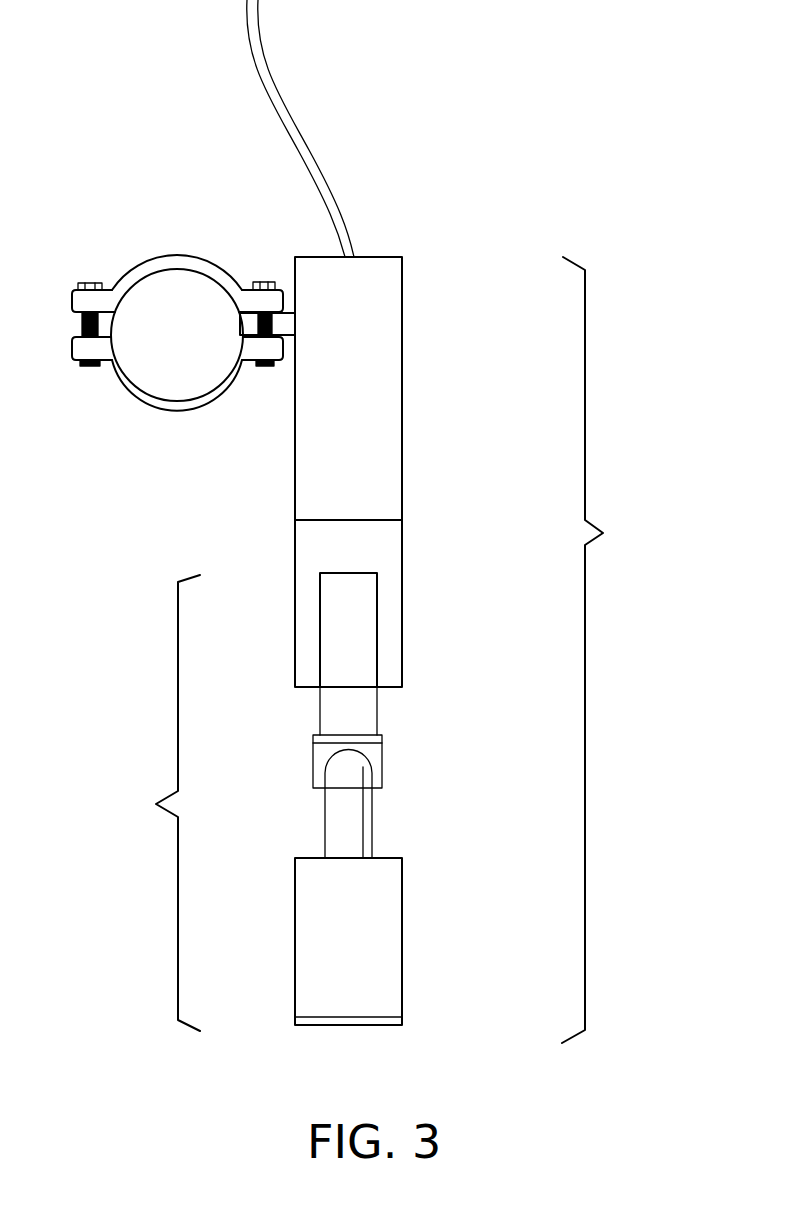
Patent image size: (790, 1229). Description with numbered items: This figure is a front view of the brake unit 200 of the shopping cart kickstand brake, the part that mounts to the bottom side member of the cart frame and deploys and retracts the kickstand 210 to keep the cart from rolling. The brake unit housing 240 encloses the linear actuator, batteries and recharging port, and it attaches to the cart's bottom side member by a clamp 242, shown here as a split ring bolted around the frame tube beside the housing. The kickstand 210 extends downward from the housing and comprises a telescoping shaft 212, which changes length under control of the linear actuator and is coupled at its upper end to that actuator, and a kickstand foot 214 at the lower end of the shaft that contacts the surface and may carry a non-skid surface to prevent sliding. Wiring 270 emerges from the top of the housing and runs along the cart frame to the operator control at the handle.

The brake unit 200 is at (618, 650).
The kickstand 210 is at (226, 802).
The telescoping shaft 212 is at (347, 818).
The kickstand foot 214 is at (297, 926).
The brake unit housing 240 is at (402, 326).
The clamp 242 is at (177, 413).
The wiring 270 is at (278, 118).